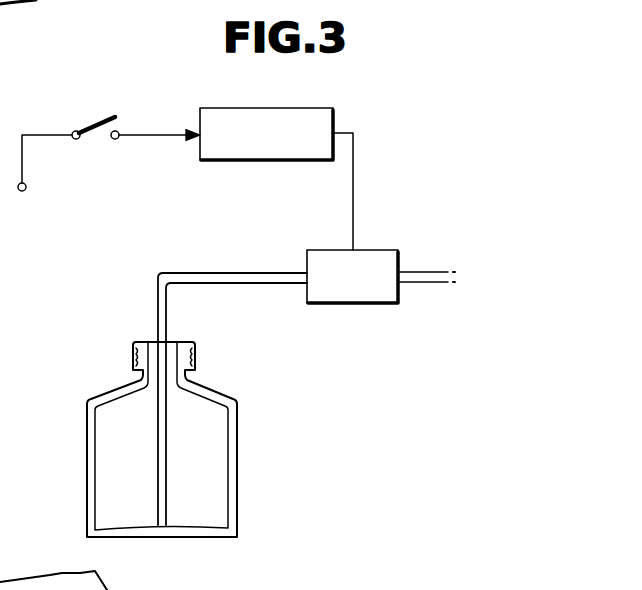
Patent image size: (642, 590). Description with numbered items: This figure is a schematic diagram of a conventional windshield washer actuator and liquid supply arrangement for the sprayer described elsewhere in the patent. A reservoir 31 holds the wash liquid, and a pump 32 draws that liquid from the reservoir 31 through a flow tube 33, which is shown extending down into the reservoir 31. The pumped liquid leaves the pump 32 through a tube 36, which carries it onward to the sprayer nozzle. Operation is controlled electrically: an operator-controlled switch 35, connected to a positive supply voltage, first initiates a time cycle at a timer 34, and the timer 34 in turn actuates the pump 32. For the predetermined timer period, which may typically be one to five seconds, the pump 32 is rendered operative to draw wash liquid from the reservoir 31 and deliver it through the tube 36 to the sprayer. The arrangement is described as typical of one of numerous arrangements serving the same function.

The reservoir 31 is at (237, 428).
The pump 32 is at (353, 304).
The flow tube 33 is at (205, 284).
The timer 34 is at (335, 109).
The operator-controlled switch 35 is at (104, 118).
The tube 36 is at (418, 272).